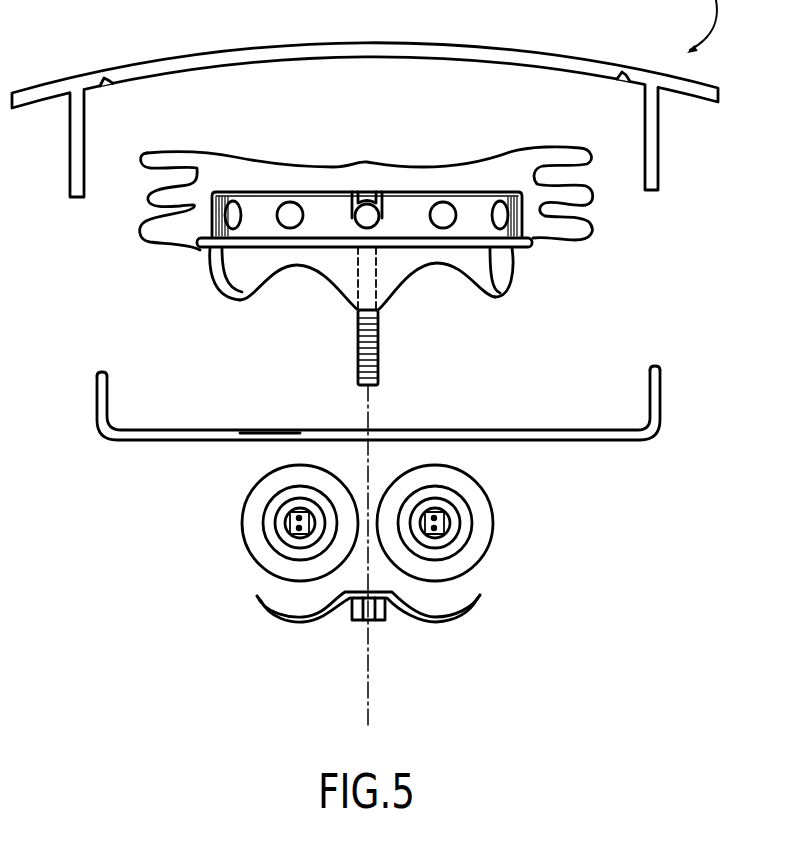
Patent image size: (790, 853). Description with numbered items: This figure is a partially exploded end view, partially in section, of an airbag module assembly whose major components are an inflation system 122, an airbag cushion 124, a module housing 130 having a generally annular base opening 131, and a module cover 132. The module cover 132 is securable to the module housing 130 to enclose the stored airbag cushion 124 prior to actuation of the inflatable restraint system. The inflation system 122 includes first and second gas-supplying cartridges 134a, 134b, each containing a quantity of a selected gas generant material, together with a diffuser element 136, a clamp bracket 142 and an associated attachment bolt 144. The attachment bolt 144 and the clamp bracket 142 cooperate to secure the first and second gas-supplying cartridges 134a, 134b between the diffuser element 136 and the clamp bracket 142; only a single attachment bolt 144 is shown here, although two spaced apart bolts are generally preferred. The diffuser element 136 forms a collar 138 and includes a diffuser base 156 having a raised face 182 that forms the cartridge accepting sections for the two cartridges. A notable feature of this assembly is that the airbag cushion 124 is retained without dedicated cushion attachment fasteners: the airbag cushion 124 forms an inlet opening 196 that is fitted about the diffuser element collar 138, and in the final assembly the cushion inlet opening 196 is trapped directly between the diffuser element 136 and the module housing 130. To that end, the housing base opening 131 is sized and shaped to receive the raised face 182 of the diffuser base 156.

The inflation system 122 is at (407, 562).
The airbag cushion 124 is at (233, 157).
The module housing 130 is at (100, 428).
The base opening 131 is at (272, 436).
The module cover 132 is at (77, 86).
The first gas-supplying cartridge 134a is at (255, 550).
The second gas-supplying cartridge 134b is at (467, 553).
The diffuser element 136 is at (490, 295).
The collar 138 is at (200, 248).
The clamp bracket 142 is at (453, 612).
The attachment bolt 144 is at (380, 347).
The diffuser base 156 is at (512, 287).
The raised face 182 is at (335, 275).
The inlet opening 196 is at (215, 270).